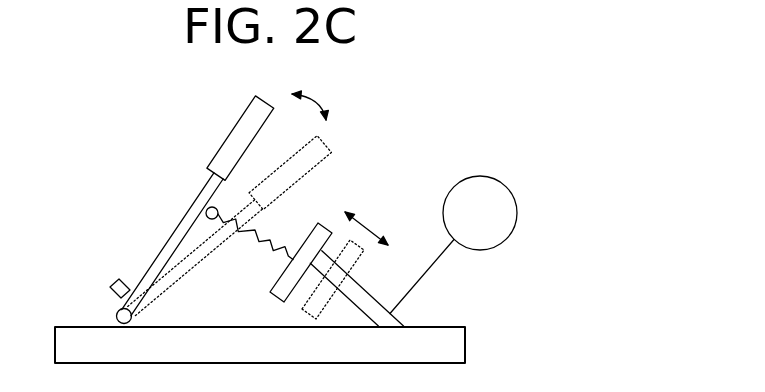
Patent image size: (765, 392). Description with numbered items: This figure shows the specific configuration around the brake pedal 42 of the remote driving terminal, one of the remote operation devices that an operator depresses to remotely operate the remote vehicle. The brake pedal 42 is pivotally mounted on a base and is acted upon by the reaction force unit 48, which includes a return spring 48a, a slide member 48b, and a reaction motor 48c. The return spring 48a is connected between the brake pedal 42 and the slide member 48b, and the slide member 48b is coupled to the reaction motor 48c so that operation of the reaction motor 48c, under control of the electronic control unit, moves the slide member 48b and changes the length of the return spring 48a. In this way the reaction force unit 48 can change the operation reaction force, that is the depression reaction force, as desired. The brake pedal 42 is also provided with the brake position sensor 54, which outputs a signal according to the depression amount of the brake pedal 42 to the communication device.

The brake pedal 42 is at (220, 145).
The brake position sensor 54 is at (111, 284).
The reaction force unit 48 is at (542, 105).
The return spring 48a is at (271, 236).
The slide member 48b is at (321, 222).
The reaction motor 48c is at (477, 176).